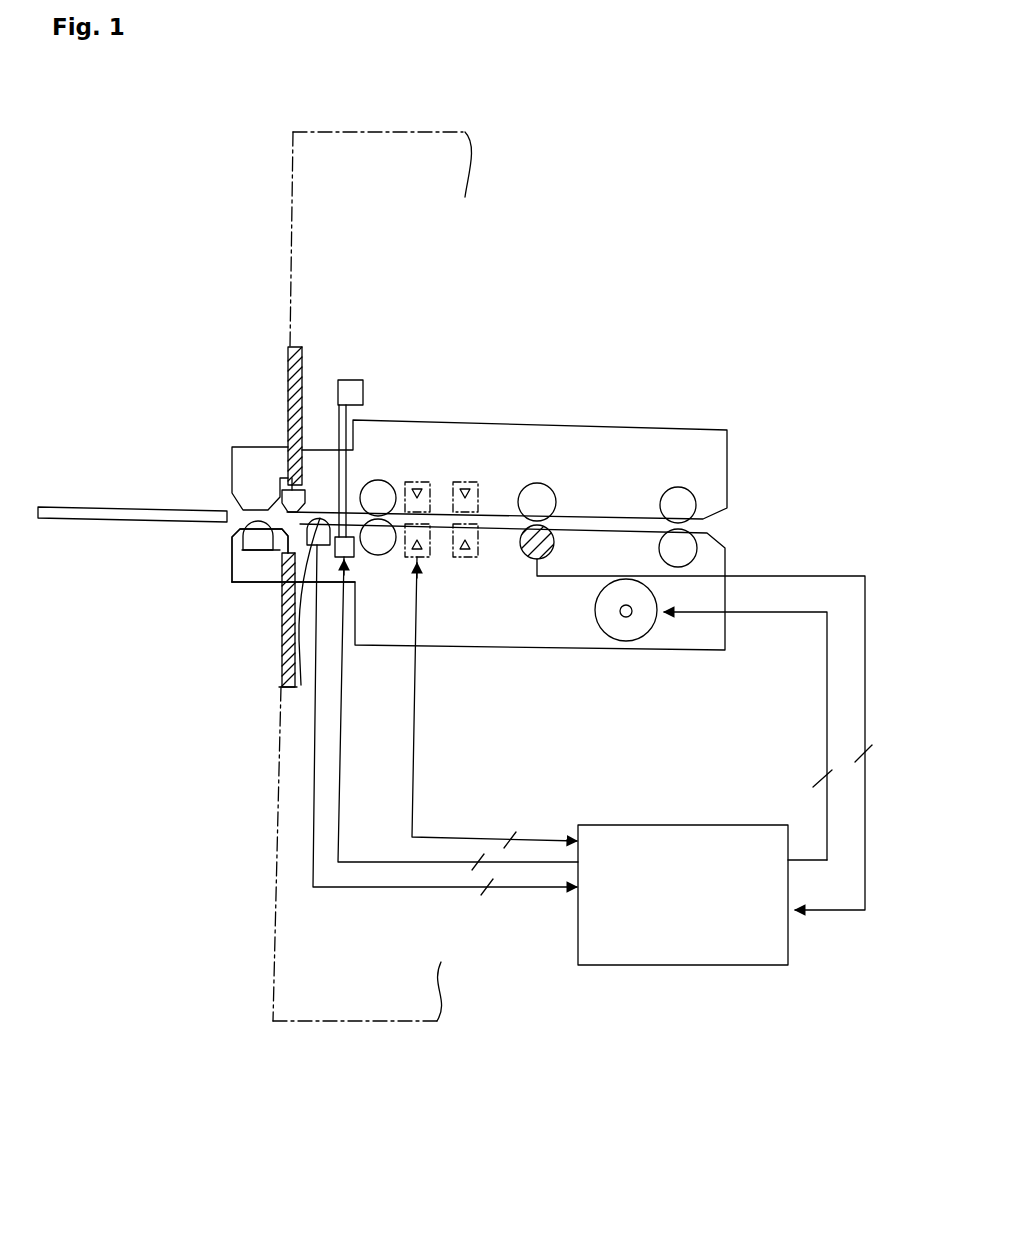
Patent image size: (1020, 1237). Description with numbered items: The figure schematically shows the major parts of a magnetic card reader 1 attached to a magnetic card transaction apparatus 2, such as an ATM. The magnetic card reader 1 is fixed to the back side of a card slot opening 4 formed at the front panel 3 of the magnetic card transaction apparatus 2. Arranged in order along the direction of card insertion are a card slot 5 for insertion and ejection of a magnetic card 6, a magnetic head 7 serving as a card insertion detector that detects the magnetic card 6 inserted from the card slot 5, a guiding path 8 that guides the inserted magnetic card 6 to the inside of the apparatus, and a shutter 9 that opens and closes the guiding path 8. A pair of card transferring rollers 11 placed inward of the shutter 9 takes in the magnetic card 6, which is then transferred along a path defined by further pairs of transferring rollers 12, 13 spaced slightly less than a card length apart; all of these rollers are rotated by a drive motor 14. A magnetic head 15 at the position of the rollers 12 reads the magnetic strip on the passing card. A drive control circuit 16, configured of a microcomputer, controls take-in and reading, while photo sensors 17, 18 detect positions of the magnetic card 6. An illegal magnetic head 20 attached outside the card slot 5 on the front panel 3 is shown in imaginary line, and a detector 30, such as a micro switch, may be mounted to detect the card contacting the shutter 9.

The magnetic card reader 1 is at (500, 427).
The magnetic card transaction apparatus 2 is at (393, 168).
The front panel 3 is at (288, 392).
The card slot opening 4 is at (283, 488).
The card slot 5 is at (277, 520).
The magnetic card 6 is at (122, 508).
The magnetic head 7 is at (285, 627).
The guiding path 8 is at (303, 503).
The shutter 9 is at (353, 480).
The pair of card transferring rollers 11 is at (390, 474).
The transferring rollers 12 is at (565, 493).
The transferring rollers 13 is at (663, 486).
The drive motor 14 is at (622, 630).
The magnetic head 15 is at (522, 553).
The drive control circuit 16 is at (672, 942).
The photo sensor 17 is at (482, 503).
The photo sensor 18 is at (433, 478).
The illegal magnetic head 20 is at (243, 543).
The detector 30 is at (347, 378).